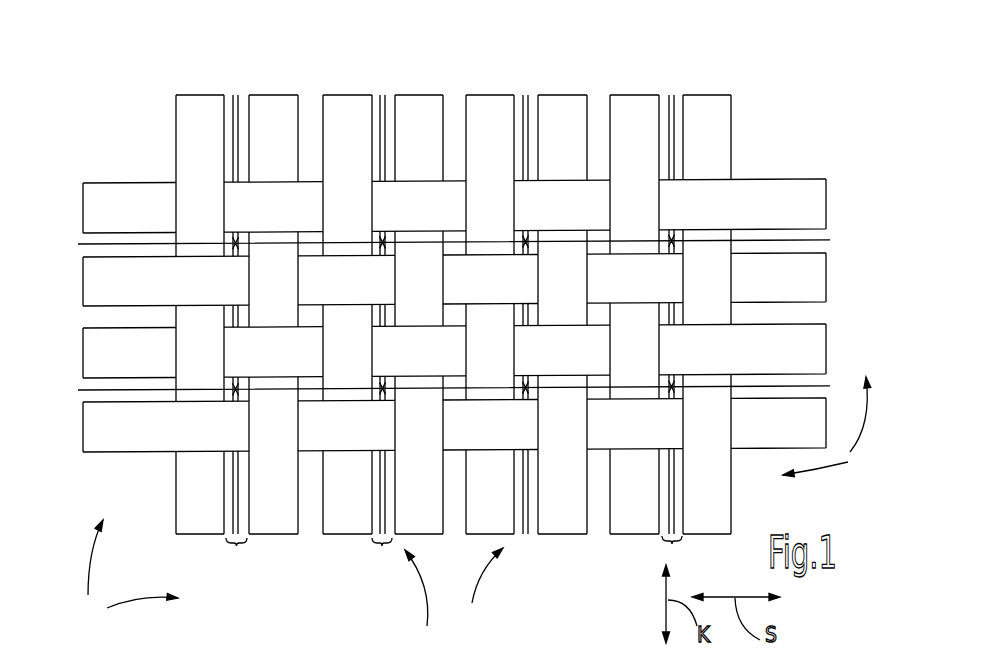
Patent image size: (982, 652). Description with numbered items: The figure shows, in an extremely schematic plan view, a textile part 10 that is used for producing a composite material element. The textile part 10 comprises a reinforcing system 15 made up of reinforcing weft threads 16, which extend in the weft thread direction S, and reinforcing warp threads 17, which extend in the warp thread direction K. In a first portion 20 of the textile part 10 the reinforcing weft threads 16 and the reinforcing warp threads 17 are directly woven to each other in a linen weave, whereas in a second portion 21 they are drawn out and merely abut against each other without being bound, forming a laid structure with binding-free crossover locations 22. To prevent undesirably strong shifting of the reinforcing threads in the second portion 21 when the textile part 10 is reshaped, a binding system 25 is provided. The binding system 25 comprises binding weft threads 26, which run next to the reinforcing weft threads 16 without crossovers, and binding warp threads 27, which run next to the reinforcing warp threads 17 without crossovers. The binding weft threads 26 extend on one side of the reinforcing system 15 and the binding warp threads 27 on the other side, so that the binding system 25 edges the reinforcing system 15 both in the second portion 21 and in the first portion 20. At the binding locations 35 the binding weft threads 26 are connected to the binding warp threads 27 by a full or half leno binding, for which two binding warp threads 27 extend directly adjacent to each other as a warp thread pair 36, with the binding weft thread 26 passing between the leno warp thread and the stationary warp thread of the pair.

The textile part 10 is at (780, 118).
The reinforcing system 15 is at (133, 571).
The reinforcing weft threads 16 is at (93, 193).
The reinforcing warp threads 17 is at (197, 522).
The first portion 20 is at (424, 599).
The second portion 21 is at (486, 587).
The binding-free crossover locations 22 is at (493, 215).
The binding system 25 is at (827, 428).
The binding weft threads 26 is at (802, 242).
The binding warp threads 27 is at (240, 490).
The binding locations 35 is at (538, 237).
The warp thread pair 36 is at (236, 547).